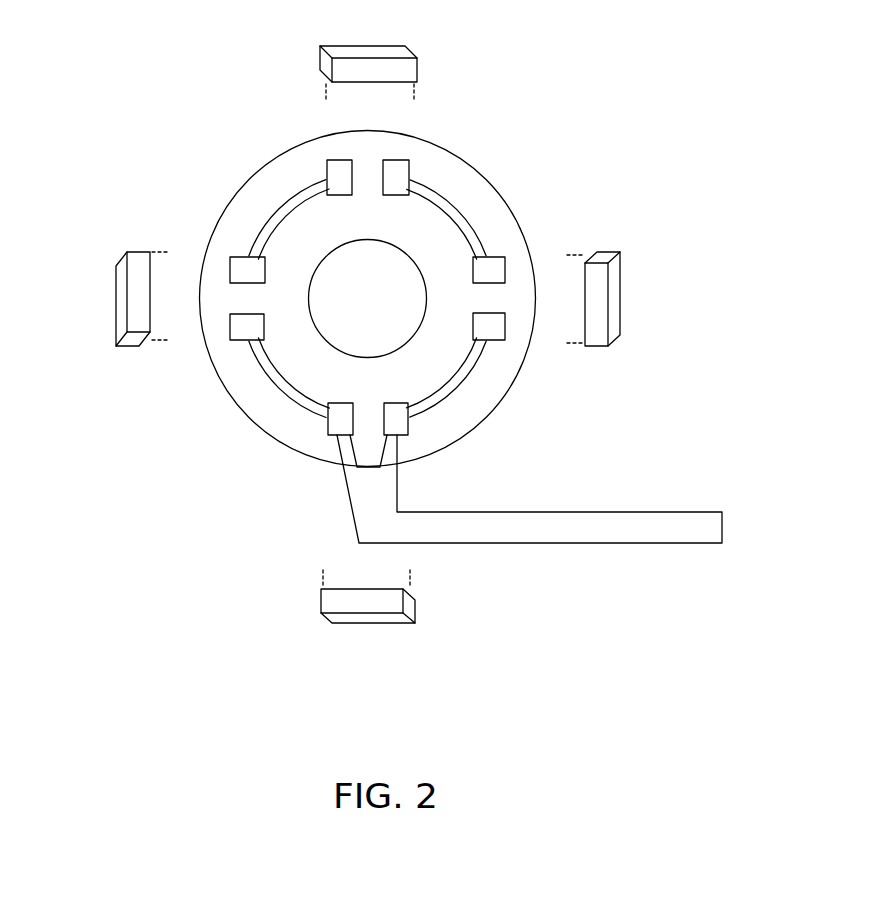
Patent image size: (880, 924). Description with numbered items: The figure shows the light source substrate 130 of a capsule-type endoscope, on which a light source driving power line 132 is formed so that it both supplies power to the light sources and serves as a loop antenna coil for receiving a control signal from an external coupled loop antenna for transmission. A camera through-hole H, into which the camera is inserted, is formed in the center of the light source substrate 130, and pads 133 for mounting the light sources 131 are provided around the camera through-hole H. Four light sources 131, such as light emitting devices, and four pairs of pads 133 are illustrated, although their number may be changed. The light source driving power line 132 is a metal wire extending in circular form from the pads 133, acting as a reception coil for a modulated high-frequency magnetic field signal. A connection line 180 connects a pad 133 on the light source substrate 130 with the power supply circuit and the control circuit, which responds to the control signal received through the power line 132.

The light source substrate 130 is at (292, 166).
The light source 131 is at (353, 50).
The light source driving power line 132 is at (260, 232).
The pad 133 is at (494, 268).
The camera through-hole H is at (378, 297).
The connection line 180 is at (622, 518).